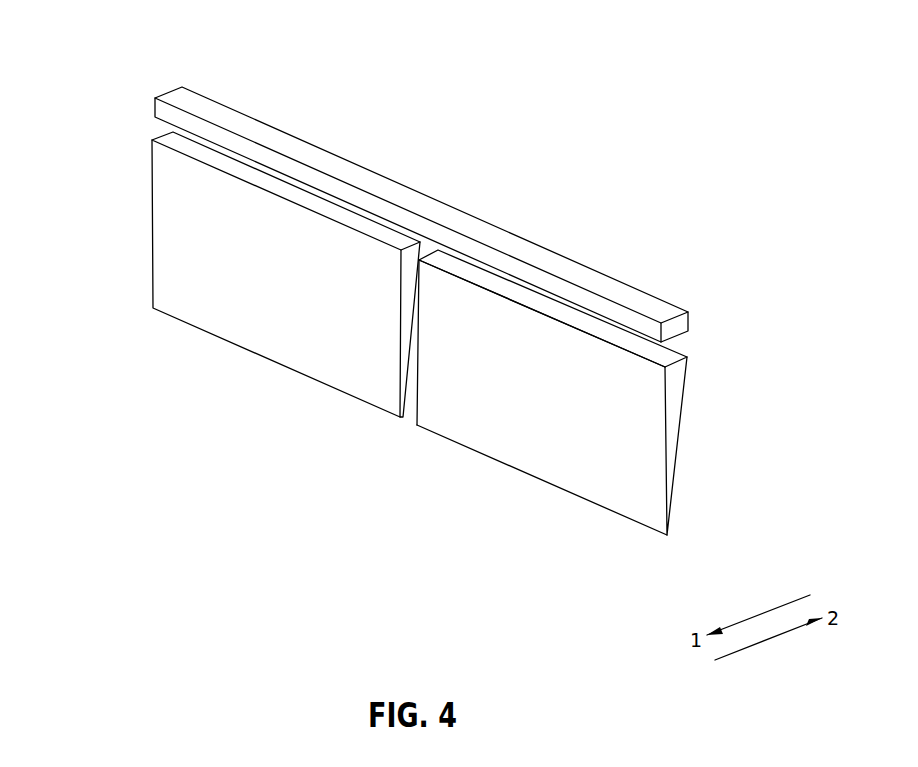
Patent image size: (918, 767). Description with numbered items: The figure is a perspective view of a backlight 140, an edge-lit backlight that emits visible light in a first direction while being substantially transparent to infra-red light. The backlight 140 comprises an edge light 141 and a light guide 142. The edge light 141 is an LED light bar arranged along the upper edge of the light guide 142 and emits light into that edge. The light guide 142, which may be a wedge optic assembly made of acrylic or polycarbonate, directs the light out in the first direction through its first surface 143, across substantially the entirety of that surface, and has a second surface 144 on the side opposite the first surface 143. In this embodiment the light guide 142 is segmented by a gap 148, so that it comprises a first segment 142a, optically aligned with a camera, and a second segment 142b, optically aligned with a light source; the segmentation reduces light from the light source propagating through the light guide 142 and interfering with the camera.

The backlight 140 is at (155, 87).
The edge light 141 is at (681, 323).
The light guide 142 is at (673, 423).
The first segment 142a is at (258, 308).
The second segment 142b is at (527, 427).
The first surface 143 is at (640, 505).
The second surface 144 is at (677, 482).
The gap 148 is at (403, 423).